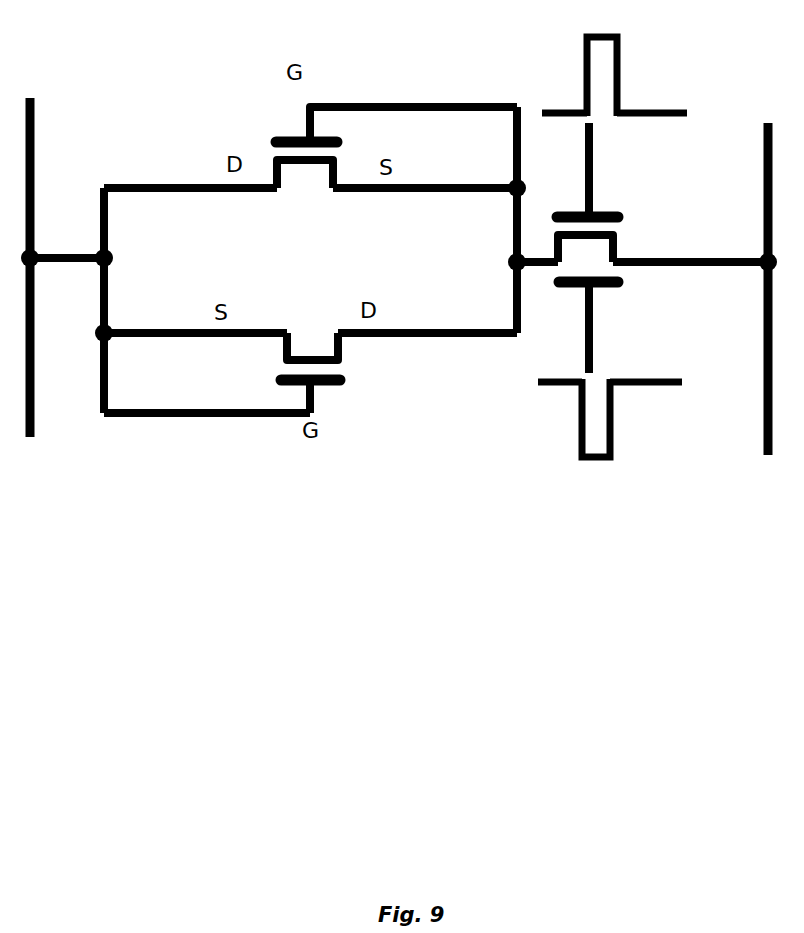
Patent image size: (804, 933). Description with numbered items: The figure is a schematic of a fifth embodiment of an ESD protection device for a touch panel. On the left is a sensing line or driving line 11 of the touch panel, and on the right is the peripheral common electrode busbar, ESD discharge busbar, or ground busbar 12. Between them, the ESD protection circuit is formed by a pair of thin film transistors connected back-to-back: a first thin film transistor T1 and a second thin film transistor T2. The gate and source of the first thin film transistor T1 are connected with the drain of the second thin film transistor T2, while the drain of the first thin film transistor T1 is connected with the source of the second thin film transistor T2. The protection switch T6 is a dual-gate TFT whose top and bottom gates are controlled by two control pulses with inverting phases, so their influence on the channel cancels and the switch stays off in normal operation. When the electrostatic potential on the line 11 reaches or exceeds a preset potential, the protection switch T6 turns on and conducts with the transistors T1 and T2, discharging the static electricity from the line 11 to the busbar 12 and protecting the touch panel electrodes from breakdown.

The sensing line or driving line 11 is at (44, 241).
The ground busbar 12 is at (774, 259).
The first thin film transistor T1 is at (396, 162).
The second thin film transistor T2 is at (310, 350).
The protection switch T6 is at (626, 248).